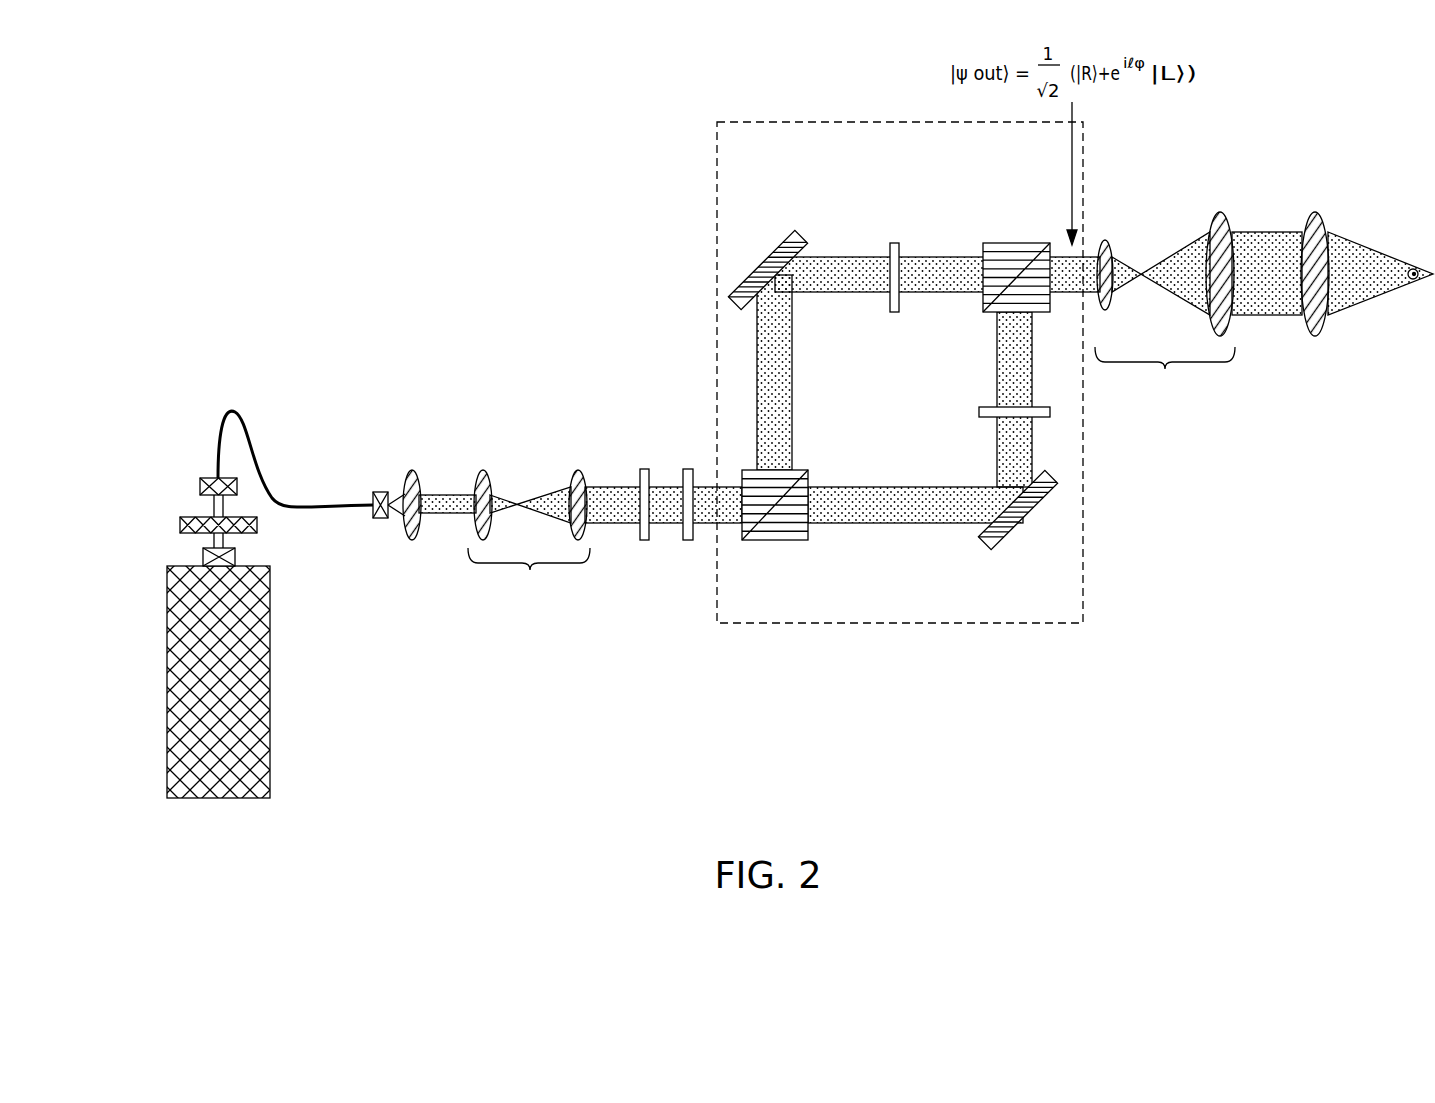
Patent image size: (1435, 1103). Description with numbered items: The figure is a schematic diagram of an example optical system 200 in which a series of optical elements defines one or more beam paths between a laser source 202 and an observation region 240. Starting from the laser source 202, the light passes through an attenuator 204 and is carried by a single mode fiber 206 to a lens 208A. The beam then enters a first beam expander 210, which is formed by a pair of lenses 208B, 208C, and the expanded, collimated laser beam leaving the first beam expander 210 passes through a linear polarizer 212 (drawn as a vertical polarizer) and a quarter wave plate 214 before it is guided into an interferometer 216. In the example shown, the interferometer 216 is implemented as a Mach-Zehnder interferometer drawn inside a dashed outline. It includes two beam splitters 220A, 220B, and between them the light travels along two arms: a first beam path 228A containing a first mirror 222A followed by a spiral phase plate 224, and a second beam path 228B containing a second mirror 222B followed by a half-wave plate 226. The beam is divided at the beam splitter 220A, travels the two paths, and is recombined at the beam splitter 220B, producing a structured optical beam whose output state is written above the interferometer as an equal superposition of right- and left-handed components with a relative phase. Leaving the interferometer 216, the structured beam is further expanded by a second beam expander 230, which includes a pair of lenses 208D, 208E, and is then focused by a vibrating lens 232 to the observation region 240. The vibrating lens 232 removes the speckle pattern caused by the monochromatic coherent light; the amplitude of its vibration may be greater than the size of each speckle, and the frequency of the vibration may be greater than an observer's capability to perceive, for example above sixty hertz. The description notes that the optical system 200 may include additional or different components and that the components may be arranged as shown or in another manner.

The optical system 200 is at (224, 147).
The laser source 202 is at (270, 685).
The attenuator 204 is at (166, 508).
The single mode fiber 206 is at (250, 450).
The lens 208A is at (412, 470).
The lens 208B is at (483, 470).
The lens 208C is at (578, 470).
The lens 208D is at (1106, 240).
The lens 208E is at (1222, 212).
The first beam expander 210 is at (529, 610).
The linear polarizer 212 is at (647, 459).
The quarter wave plate 214 is at (688, 540).
The interferometer 216 is at (950, 626).
The beam splitter 220A is at (773, 542).
The beam splitter 220B is at (1012, 243).
The first mirror 222A is at (766, 260).
The second mirror 222B is at (1028, 517).
The spiral phase plate 224 is at (895, 243).
The half-wave plate 226 is at (979, 411).
The first beam path 228A is at (788, 308).
The second beam path 228B is at (1003, 331).
The second beam expander 230 is at (1165, 409).
The vibrating lens 232 is at (1318, 212).
The observation region 240 is at (1422, 302).